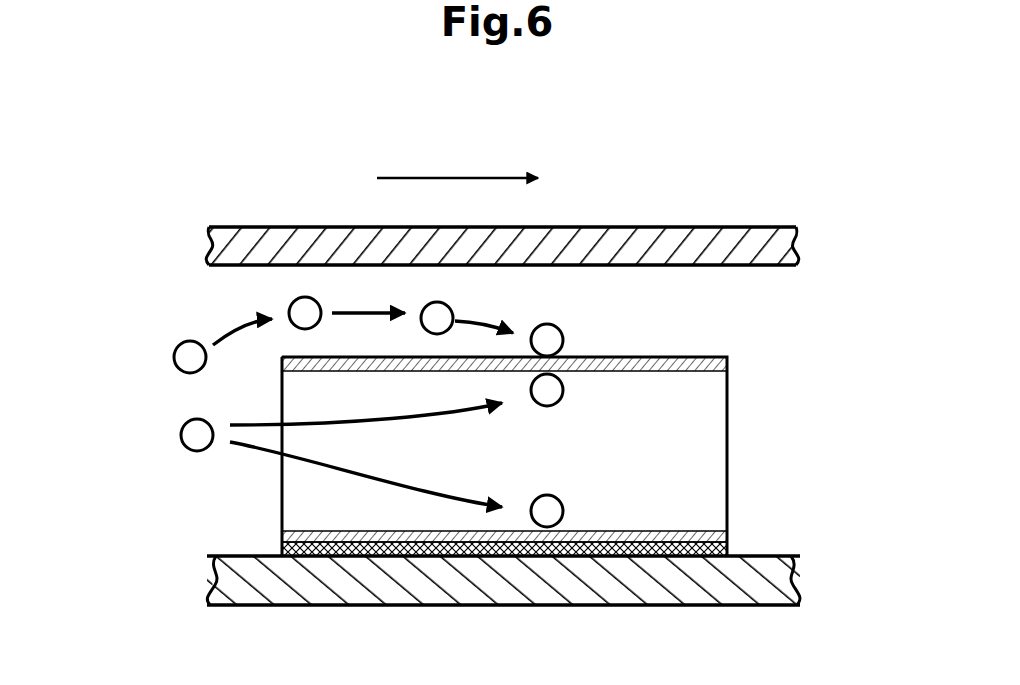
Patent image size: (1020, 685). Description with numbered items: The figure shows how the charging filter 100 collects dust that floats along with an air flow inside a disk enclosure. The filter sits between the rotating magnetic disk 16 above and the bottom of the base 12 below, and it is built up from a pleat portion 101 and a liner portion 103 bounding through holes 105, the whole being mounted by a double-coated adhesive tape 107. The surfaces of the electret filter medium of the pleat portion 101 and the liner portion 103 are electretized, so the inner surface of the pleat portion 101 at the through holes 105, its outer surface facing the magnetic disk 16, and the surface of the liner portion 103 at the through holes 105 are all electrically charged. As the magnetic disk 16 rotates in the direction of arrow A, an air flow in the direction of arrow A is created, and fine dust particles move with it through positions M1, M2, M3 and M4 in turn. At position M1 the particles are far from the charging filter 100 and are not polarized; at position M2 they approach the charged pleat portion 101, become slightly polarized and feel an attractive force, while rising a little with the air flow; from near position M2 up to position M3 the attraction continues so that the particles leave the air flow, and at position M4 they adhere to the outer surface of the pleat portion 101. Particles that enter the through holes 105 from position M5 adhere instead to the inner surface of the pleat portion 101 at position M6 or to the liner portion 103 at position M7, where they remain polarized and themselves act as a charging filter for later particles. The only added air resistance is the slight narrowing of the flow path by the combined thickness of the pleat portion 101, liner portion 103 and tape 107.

The arrow A is at (445, 178).
The magnetic disk 16 is at (638, 245).
The base 12 is at (222, 556).
The charging filter 100 is at (599, 421).
The pleat portion 101 is at (727, 423).
The through holes 105 is at (428, 452).
The liner portion 103 is at (673, 531).
The double-coated adhesive tape 107 is at (727, 547).
The position M1 is at (176, 360).
The position M2 is at (290, 302).
The position M3 is at (453, 302).
The position M4 is at (562, 341).
The position M5 is at (178, 434).
The position M6 is at (557, 402).
The position M7 is at (556, 497).